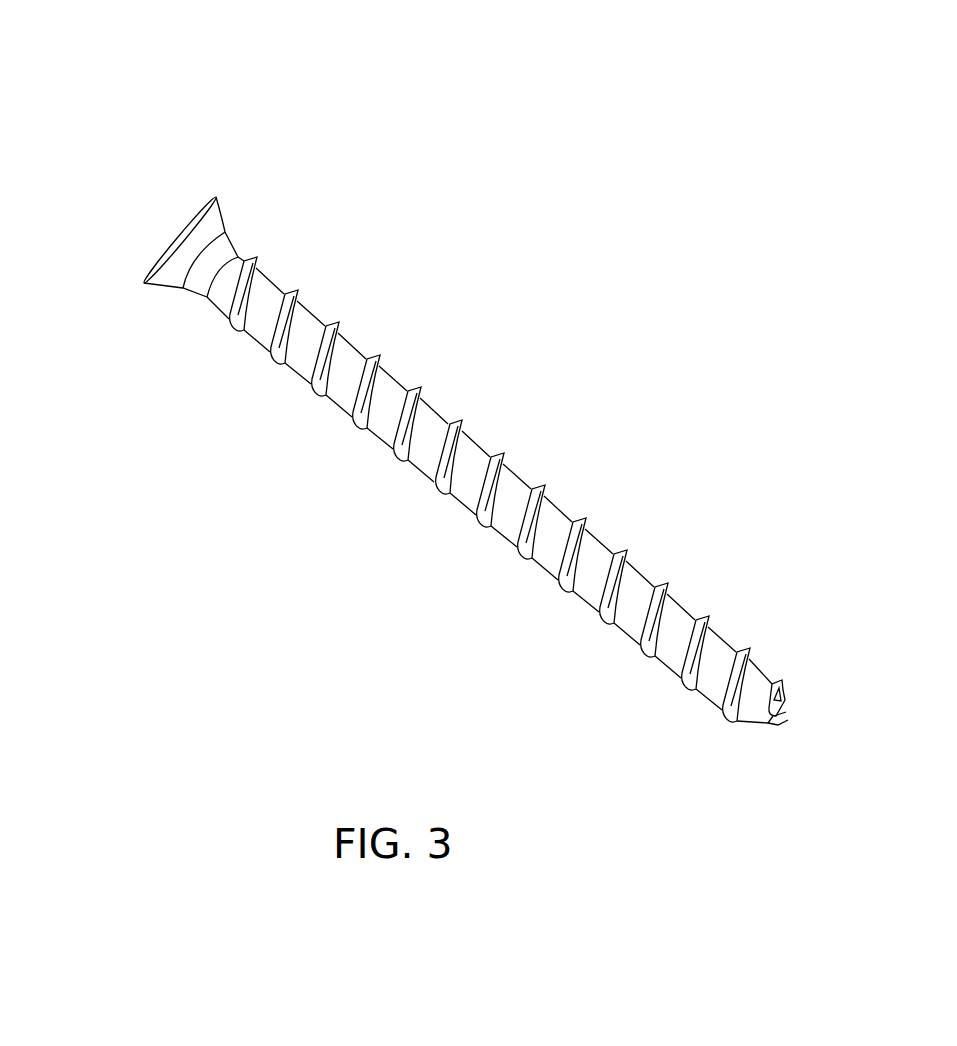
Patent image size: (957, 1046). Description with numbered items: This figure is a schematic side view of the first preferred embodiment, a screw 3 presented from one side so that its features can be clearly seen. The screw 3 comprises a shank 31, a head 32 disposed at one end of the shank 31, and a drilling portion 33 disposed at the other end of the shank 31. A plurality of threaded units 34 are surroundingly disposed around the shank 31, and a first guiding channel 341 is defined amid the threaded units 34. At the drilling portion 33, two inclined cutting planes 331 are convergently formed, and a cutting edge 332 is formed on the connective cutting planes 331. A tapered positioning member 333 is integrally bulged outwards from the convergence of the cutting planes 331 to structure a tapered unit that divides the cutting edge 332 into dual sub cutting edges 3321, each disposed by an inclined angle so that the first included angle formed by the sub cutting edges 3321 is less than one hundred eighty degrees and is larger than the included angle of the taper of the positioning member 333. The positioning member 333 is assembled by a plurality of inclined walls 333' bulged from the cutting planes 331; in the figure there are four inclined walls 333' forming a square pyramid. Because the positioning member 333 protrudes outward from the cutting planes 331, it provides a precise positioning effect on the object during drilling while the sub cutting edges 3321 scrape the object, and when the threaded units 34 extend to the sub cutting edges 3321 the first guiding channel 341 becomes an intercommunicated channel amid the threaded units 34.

The screw 3 is at (517, 273).
The shank 31 is at (460, 498).
The head 32 is at (220, 202).
The drilling portion 33 is at (748, 730).
The threaded units 34 is at (598, 620).
The first guiding channel 341 is at (761, 660).
The inclined cutting planes 331 is at (780, 707).
The cutting edge 332 is at (783, 708).
The sub cutting edges 3321 is at (762, 733).
The tapered positioning member 333 is at (847, 735).
The inclined walls 333' is at (865, 699).